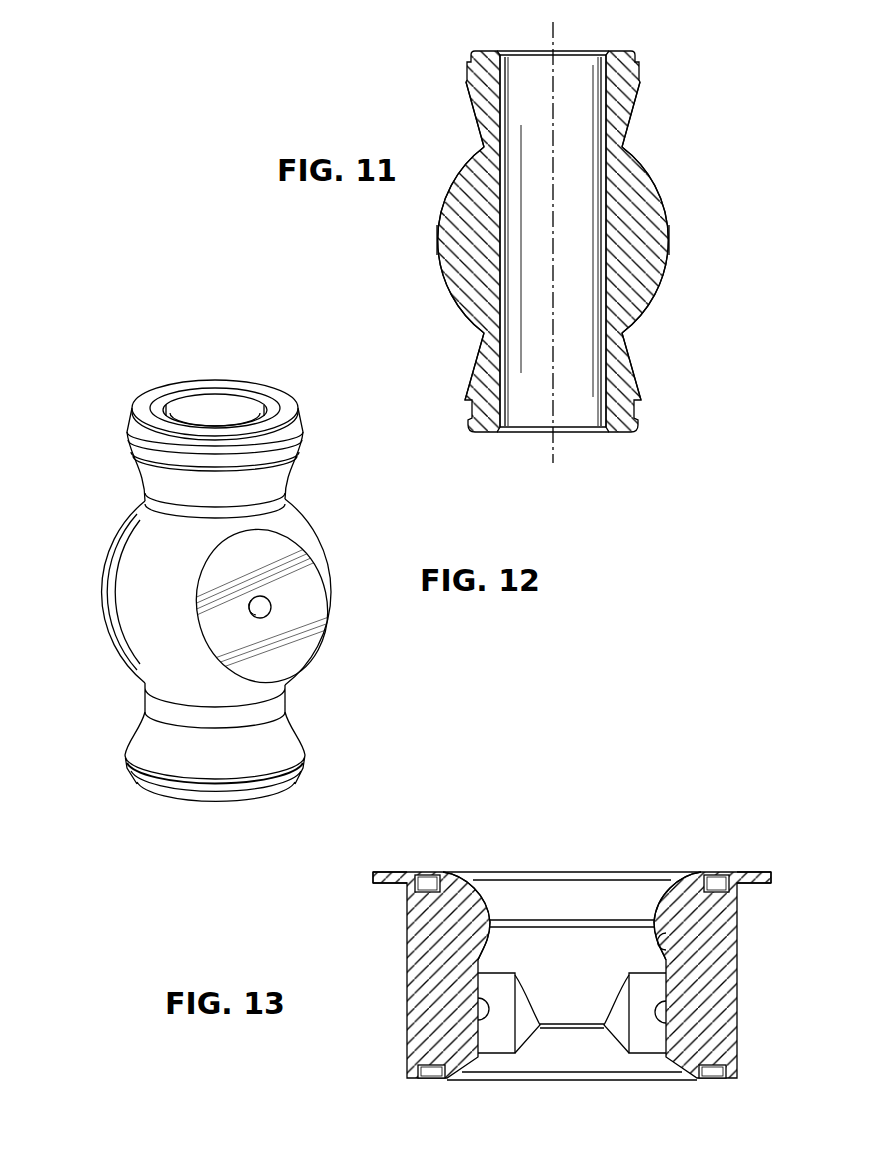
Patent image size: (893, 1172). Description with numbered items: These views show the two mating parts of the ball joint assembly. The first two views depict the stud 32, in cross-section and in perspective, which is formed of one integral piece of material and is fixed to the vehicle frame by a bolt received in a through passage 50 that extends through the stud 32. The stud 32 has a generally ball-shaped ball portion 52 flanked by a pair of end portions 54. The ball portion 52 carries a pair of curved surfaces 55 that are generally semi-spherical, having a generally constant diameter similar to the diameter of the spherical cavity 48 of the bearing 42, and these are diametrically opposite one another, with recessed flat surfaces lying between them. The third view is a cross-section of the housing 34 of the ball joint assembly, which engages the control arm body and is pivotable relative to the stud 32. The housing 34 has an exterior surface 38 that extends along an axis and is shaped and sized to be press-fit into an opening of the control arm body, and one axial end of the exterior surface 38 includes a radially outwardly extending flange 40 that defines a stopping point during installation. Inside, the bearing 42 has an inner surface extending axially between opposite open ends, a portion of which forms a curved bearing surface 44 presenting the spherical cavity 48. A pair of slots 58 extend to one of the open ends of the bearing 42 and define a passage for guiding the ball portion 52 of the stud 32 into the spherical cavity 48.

In FIG. 11, the stud 32 is at (552, 241).
In FIG. 12, the stud 32 is at (218, 561).
In FIG. 13, the housing 34 is at (560, 946).
In FIG. 13, the exterior surface 38 is at (408, 980).
In FIG. 13, the flange 40 is at (393, 872).
In FIG. 13, the bearing 42 is at (450, 944).
In FIG. 13, the curved bearing surface 44 is at (707, 907).
In FIG. 13, the spherical cavity 48 is at (552, 948).
In FIG. 11, the through passage 50 is at (604, 376).
In FIG. 12, the through passage 50 is at (203, 406).
In FIG. 11, the ball portion 52 is at (631, 282).
In FIG. 12, the ball portion 52 is at (145, 642).
In FIG. 11, the end portions 54 is at (477, 98).
In FIG. 12, the end portions 54 is at (284, 465).
In FIG. 11, the curved surfaces 55 is at (667, 223).
In FIG. 12, the curved surfaces 55 is at (334, 578).
In FIG. 13, the slots 58 is at (487, 1016).